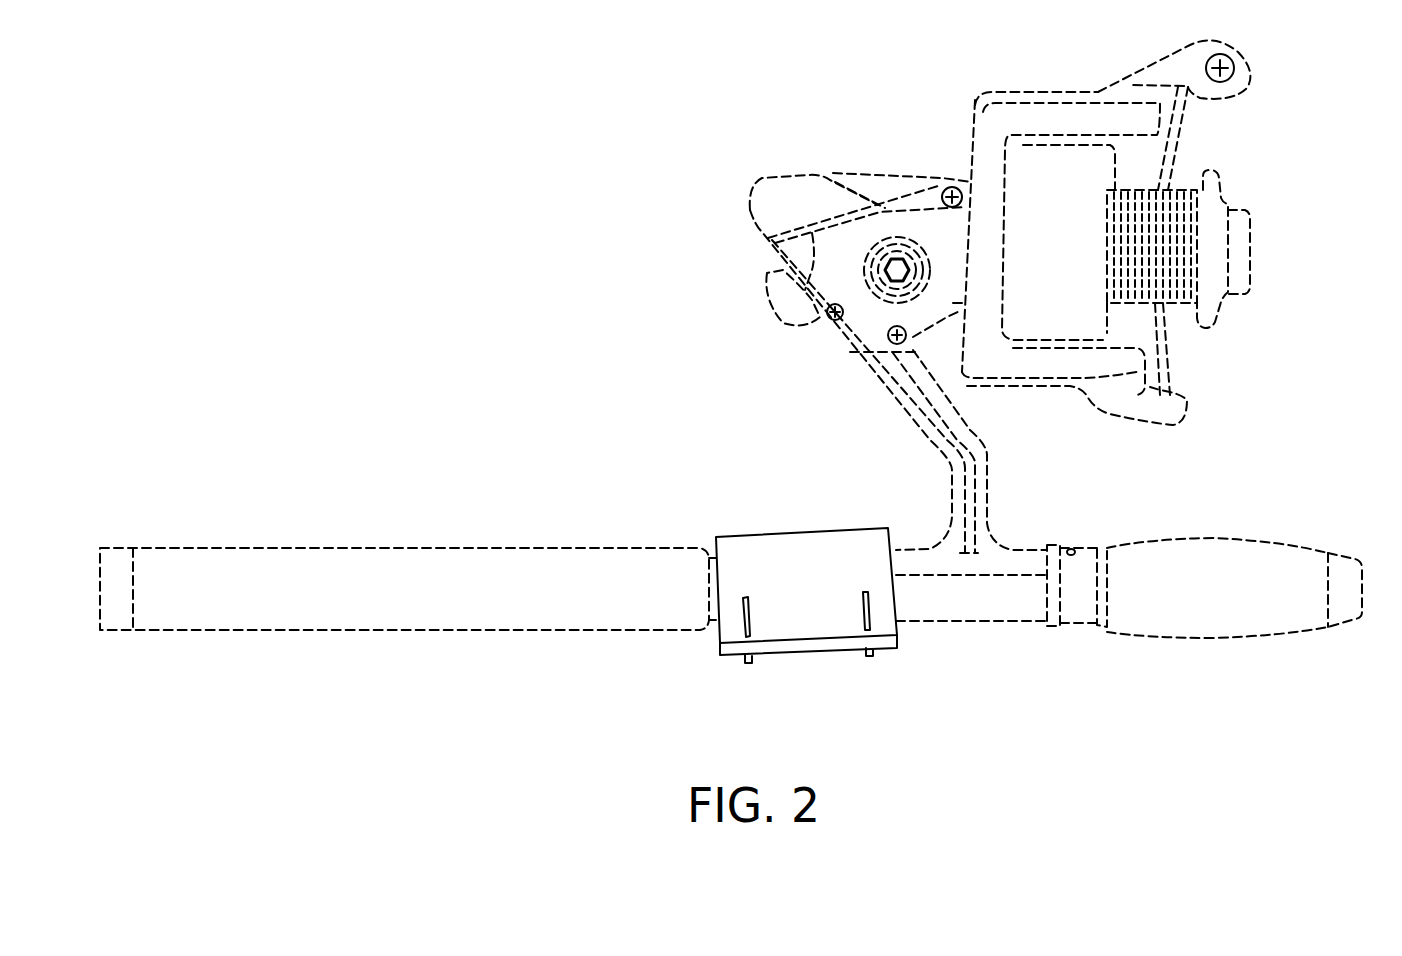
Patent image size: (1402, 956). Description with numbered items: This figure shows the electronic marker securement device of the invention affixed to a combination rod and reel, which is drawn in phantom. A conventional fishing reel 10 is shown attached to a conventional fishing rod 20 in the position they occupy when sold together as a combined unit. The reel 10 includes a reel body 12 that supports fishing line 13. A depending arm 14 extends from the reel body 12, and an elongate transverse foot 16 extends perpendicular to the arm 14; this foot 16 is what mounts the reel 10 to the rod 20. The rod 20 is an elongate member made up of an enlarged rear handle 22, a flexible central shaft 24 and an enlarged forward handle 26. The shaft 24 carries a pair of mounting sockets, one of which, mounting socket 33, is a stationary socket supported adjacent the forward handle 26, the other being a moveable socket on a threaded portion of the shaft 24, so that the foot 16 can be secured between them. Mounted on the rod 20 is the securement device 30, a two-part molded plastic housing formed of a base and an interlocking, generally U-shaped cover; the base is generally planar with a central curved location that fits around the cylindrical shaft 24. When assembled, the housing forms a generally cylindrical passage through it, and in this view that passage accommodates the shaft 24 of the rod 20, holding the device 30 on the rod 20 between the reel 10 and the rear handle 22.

The fishing reel 10 is at (990, 132).
The reel body 12 is at (1060, 228).
The fishing line 13 is at (1158, 252).
The depending arm 14 is at (943, 432).
The elongate transverse foot 16 is at (1000, 557).
The fishing rod 20 is at (1203, 623).
The enlarged rear handle 22 is at (218, 605).
The flexible central shaft 24 is at (967, 612).
The enlarged forward handle 26 is at (1180, 562).
The securement device 30 is at (757, 548).
The mounting socket 33 is at (1077, 610).